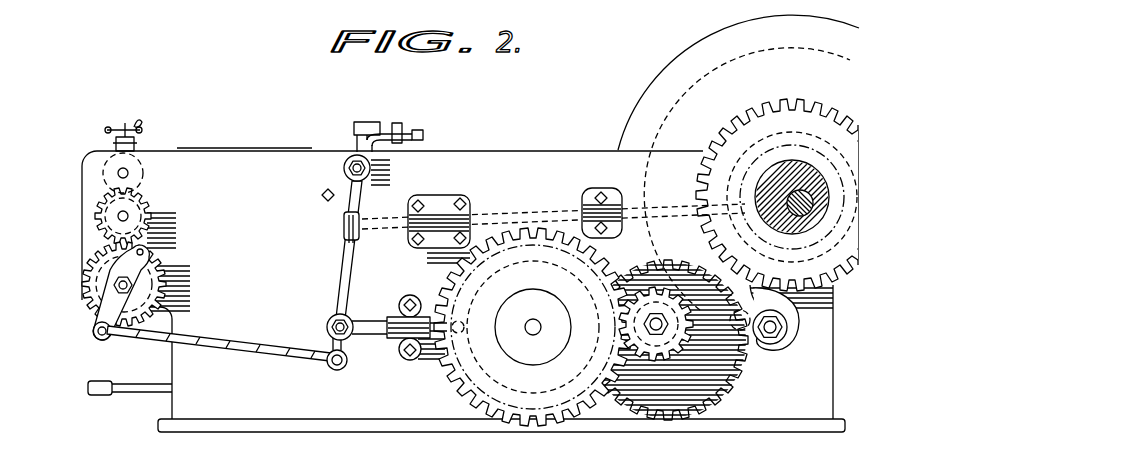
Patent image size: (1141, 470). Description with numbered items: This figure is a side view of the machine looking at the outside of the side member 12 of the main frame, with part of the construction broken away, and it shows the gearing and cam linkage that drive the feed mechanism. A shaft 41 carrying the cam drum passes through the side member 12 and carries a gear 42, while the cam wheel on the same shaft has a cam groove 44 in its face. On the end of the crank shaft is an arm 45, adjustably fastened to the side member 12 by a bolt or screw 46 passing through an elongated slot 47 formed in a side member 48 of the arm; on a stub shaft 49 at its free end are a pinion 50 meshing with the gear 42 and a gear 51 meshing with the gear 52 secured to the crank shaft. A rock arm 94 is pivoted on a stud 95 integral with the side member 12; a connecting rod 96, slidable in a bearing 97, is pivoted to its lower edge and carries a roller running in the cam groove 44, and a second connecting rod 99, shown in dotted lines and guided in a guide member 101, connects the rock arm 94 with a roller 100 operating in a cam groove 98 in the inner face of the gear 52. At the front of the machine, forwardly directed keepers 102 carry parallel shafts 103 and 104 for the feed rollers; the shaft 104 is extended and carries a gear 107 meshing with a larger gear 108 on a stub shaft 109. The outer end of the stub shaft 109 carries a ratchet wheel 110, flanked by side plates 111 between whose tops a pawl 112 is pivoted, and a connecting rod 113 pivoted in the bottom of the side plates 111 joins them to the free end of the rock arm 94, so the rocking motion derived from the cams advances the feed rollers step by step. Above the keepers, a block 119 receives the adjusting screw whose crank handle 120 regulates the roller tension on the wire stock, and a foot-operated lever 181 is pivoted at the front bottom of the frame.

The side member 12 is at (477, 277).
The shaft 41 is at (533, 320).
The gear 42 is at (533, 327).
The cam groove 44 is at (523, 374).
The arm 45 is at (728, 291).
The nut 46 is at (781, 344).
The elongated slot 47 is at (752, 340).
The side member of arm 48 is at (798, 327).
The stub shaft 49 is at (657, 338).
The pinion 50 is at (670, 346).
The gear 51 is at (738, 162).
The gear 52 is at (788, 110).
The rock arm 94 is at (347, 262).
The stud 95 is at (344, 168).
The connecting rod 96 is at (370, 322).
The bearing 97 is at (397, 333).
The cam groove 98 is at (786, 146).
The connecting rod 99 is at (530, 212).
The roller 100 is at (733, 187).
The guide member 101 is at (432, 212).
The keeper 102 is at (82, 167).
The shaft 103 is at (129, 173).
The shaft 104 is at (128, 214).
The gear 107 is at (94, 215).
The gear 108 is at (84, 261).
The stub shaft 109 is at (113, 289).
The ratchet wheel 110 is at (100, 280).
The side plate 111 is at (121, 294).
The pawl 112 is at (152, 265).
The connecting rod 113 is at (214, 347).
The block 119 is at (135, 140).
The crank handle 120 is at (123, 124).
The foot-operated lever 181 is at (135, 394).